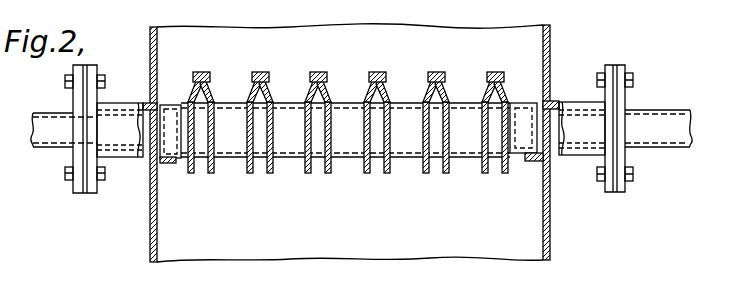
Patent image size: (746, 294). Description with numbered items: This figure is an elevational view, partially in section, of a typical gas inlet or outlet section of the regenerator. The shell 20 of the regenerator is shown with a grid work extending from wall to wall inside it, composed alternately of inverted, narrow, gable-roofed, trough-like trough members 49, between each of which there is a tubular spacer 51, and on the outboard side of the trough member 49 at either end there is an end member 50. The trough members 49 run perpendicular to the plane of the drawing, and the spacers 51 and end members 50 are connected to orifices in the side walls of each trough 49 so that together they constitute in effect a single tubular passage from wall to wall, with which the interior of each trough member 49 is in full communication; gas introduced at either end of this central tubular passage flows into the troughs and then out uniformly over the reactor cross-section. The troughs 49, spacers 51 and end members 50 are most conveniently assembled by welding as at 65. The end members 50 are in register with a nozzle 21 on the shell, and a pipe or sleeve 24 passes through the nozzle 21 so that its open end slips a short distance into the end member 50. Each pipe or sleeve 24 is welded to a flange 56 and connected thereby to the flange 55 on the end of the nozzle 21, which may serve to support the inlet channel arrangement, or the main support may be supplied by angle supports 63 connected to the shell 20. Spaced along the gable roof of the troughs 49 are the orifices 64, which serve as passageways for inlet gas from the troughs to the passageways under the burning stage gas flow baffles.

The shell 20 is at (150, 230).
The nozzle 21 is at (118, 103).
The pipe or sleeve 24 is at (47, 140).
The trough member 49 is at (364, 160).
The end member 50 is at (168, 104).
The tubular spacer 51 is at (467, 160).
The flange 55 is at (97, 188).
The flange 56 is at (73, 99).
The angle support 63 is at (169, 166).
The orifice 64 is at (487, 72).
The weld 65 is at (304, 100).